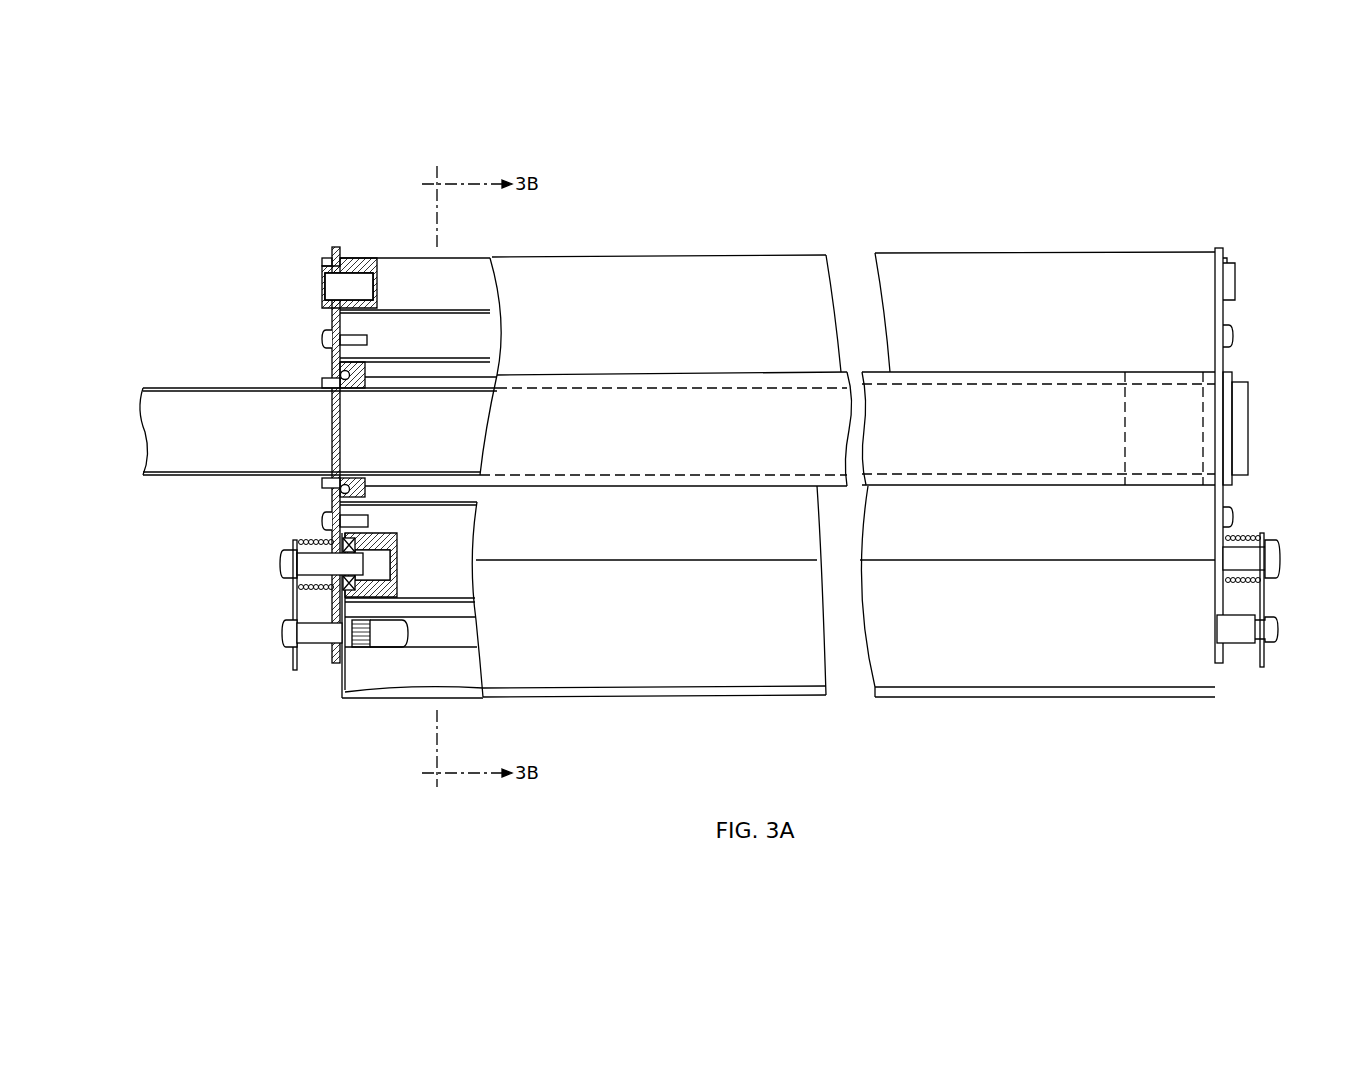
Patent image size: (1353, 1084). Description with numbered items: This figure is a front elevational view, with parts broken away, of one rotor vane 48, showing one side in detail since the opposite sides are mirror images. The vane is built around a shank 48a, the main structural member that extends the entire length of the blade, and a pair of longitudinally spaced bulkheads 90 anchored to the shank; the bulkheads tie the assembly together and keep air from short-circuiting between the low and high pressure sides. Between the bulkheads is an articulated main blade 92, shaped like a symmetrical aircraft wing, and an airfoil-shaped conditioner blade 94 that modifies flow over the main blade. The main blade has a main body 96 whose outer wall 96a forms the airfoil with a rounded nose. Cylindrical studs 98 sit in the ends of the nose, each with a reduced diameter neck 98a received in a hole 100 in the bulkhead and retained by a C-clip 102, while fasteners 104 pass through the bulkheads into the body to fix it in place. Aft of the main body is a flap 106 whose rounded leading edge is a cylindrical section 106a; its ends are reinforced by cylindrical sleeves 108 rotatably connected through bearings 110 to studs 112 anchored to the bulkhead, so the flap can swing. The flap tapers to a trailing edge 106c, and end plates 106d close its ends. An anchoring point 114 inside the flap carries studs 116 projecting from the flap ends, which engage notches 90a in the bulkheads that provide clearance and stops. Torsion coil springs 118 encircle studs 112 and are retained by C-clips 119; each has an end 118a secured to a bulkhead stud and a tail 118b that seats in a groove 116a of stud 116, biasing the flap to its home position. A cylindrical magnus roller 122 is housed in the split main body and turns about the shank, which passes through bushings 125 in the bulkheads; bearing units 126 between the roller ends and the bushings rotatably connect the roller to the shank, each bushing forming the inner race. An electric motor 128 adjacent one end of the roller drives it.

The vane 48 is at (233, 266).
The shank 48a is at (178, 388).
The bulkhead 90 is at (331, 250).
The notch 90a is at (331, 663).
The main blade 92 is at (487, 250).
The conditioner blade 94 is at (548, 688).
The main body 96 is at (715, 256).
The outer wall 96a is at (646, 324).
The cylindrical stud 98 is at (363, 265).
The reduced diameter neck 98a is at (322, 290).
The hole 100 is at (338, 312).
The C-clip 102 is at (322, 264).
The fastener 104 is at (322, 345).
The flap 106 is at (616, 627).
The cylindrical section 106a is at (457, 527).
The trailing edge 106c is at (1060, 688).
The end plate 106d is at (341, 693).
The cylindrical sleeve 108 is at (385, 534).
The bearing 110 is at (342, 545).
The stud 112 is at (279, 561).
The anchoring point 114 is at (453, 650).
The stud 116 is at (317, 648).
The groove 116a is at (293, 650).
The torsion coil spring 118 is at (304, 589).
The spring end 118a is at (302, 590).
The tail 118b is at (326, 590).
The C-clip 119 is at (292, 541).
The magnus roller 122 is at (621, 433).
The bushing 125 is at (323, 381).
The bearing unit 126 is at (363, 368).
The electric motor 128 is at (1120, 428).